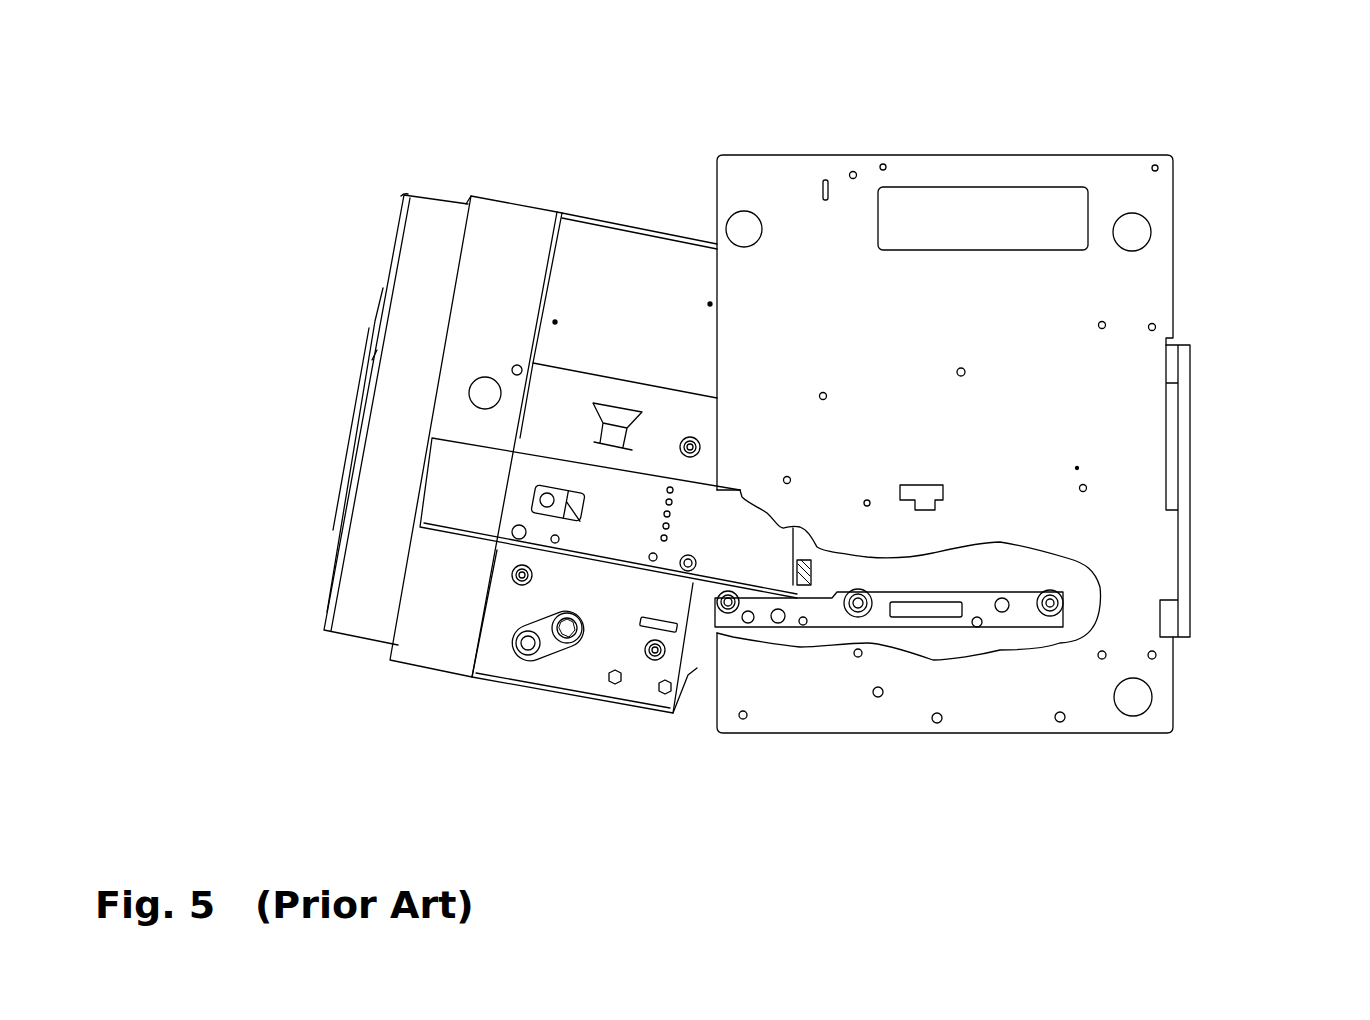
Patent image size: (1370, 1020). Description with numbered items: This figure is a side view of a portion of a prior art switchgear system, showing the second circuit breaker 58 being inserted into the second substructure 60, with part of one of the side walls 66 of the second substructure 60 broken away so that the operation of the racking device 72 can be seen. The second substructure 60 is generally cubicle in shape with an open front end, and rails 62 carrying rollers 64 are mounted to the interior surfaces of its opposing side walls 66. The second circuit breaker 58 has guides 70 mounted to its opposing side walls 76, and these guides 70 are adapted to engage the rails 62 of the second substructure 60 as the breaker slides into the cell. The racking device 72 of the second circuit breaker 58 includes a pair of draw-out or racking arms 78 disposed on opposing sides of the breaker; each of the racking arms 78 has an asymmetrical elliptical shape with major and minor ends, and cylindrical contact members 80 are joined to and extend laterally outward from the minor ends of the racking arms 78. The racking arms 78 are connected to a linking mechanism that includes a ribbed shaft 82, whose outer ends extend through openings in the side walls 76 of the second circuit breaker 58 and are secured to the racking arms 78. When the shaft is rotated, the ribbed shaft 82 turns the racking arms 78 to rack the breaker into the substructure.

The second circuit breaker 58 is at (493, 243).
The second substructure 60 is at (1117, 170).
The rails 62 is at (1018, 595).
The rollers 64 is at (1063, 608).
The side walls 66 is at (1030, 333).
The guides 70 is at (478, 503).
The racking device 72 is at (542, 663).
The side walls 76 is at (570, 332).
The racking arms 78 is at (540, 623).
The cylindrical contact members 80 is at (527, 650).
The ribbed shaft 82 is at (570, 633).